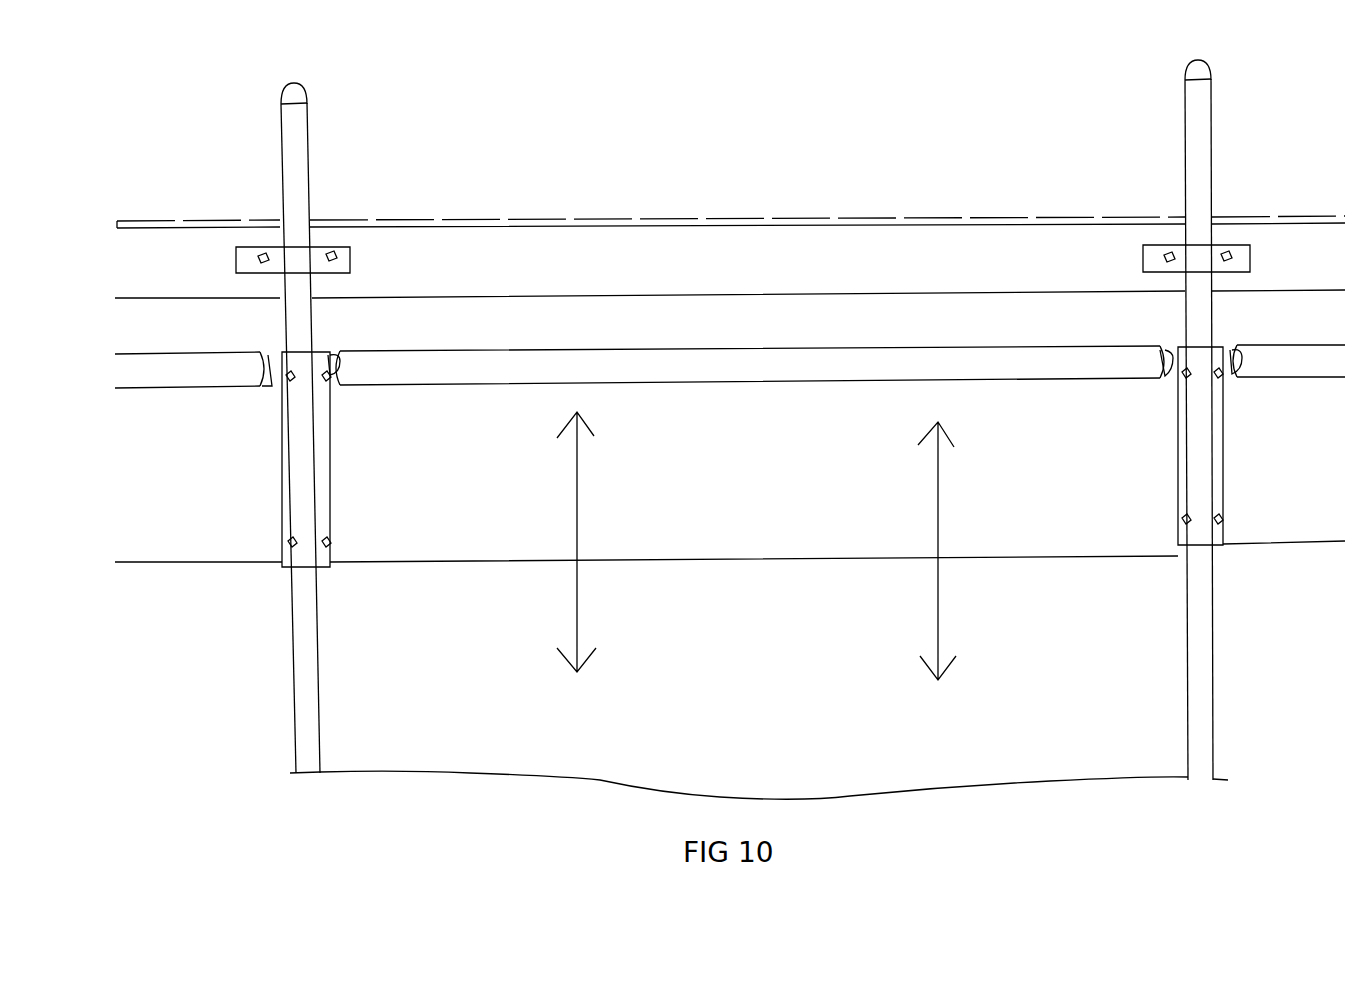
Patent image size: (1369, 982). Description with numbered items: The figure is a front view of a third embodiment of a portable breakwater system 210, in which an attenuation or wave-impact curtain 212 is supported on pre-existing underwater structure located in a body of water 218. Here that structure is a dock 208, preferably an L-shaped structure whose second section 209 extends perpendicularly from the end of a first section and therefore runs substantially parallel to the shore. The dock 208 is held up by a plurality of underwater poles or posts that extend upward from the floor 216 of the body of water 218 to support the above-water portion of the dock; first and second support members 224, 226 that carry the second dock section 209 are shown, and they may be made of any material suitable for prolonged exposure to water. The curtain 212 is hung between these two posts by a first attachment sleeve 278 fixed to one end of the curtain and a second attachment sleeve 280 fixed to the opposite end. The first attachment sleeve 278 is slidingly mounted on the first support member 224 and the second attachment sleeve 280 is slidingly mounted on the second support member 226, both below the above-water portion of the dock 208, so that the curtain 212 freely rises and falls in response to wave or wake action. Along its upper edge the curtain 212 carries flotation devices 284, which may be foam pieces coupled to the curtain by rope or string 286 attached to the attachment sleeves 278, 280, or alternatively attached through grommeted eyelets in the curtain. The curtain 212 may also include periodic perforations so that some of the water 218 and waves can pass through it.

The dock 208 is at (896, 210).
The second section 209 is at (582, 245).
The portable breakwater system 210 is at (1083, 648).
The attenuation curtain 212 is at (168, 473).
The floor 216 is at (518, 776).
The body of water 218 is at (438, 668).
The first support member 224 is at (312, 645).
The second support member 226 is at (1202, 634).
The first attachment sleeve 278 is at (308, 450).
The second attachment sleeve 280 is at (1200, 437).
The flotation devices 284 is at (142, 364).
The rope or string 286 is at (272, 384).